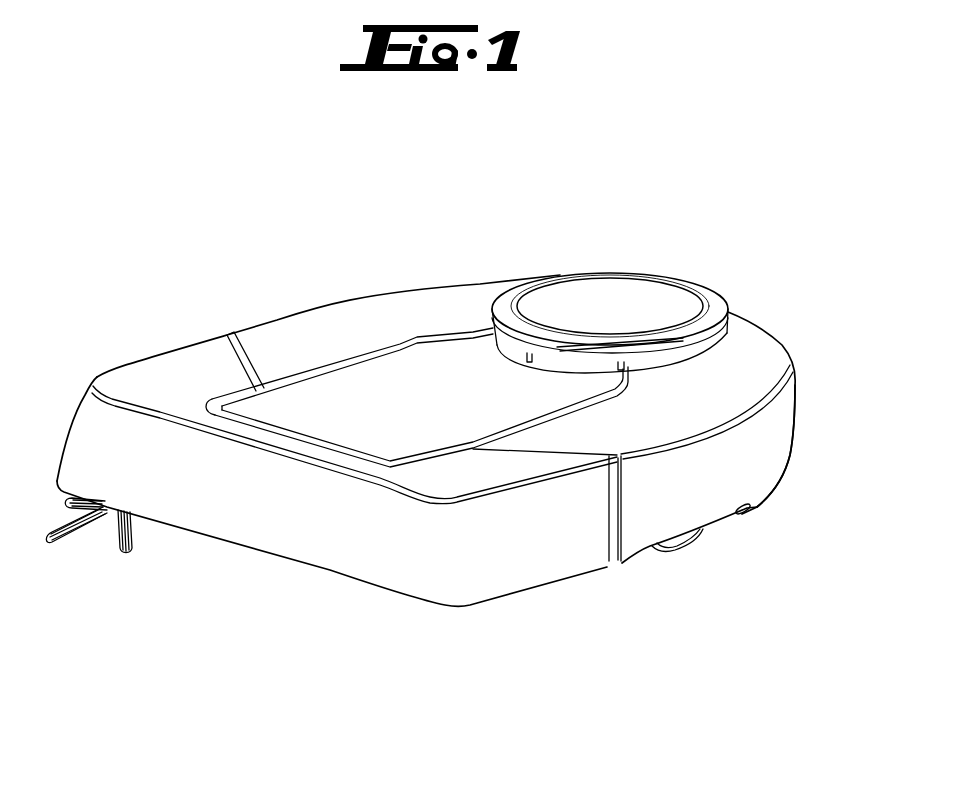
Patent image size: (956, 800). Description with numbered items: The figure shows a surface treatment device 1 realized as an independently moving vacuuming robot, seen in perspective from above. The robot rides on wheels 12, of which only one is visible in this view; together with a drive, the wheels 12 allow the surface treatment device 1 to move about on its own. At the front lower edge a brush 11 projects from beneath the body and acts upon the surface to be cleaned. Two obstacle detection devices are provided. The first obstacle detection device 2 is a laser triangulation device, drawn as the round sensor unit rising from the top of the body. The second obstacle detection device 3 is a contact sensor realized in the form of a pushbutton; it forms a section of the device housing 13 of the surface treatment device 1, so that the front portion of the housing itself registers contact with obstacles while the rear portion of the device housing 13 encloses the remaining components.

The surface treatment device 1 is at (312, 251).
The first obstacle detection device 2 is at (727, 305).
The second obstacle detection device 3 is at (373, 560).
The brush 11 is at (133, 522).
The wheels 12 is at (690, 545).
The device housing 13 is at (748, 452).